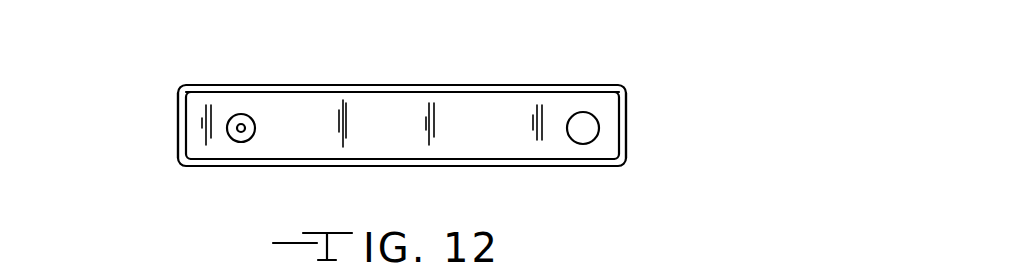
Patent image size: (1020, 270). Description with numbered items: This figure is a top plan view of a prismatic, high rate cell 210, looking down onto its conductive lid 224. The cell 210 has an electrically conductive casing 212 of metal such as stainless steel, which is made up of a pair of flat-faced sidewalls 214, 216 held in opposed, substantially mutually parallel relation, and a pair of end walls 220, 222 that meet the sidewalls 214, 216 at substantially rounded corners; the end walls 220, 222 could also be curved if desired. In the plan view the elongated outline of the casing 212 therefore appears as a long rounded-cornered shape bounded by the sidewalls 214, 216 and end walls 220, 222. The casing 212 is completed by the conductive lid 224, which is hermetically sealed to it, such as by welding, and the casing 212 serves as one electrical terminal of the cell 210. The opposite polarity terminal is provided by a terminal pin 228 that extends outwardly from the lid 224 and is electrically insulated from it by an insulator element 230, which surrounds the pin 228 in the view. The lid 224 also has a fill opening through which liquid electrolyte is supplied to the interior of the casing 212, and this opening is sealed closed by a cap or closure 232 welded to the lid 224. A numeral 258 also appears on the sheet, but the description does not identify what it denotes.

The prismatic high rate cell 210 is at (168, 99).
The electrically conductive casing 212 is at (551, 167).
The sidewall 214 is at (377, 168).
The sidewall 216 is at (381, 87).
The end wall 220 is at (177, 132).
The end wall 222 is at (626, 125).
The conductive lid 224 is at (475, 122).
The terminal pin 228 is at (240, 114).
The insulator element 230 is at (255, 126).
The cap or closure 232 is at (582, 122).
The (partial numeral from adjacent figure) 258 is at (110, 263).